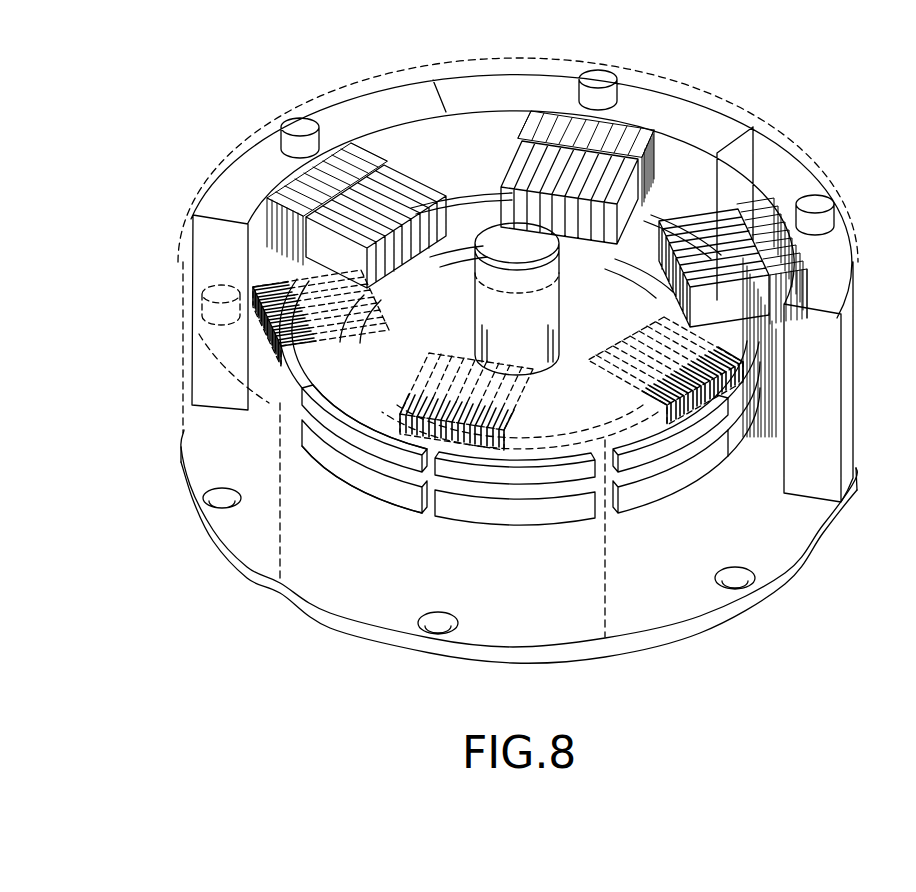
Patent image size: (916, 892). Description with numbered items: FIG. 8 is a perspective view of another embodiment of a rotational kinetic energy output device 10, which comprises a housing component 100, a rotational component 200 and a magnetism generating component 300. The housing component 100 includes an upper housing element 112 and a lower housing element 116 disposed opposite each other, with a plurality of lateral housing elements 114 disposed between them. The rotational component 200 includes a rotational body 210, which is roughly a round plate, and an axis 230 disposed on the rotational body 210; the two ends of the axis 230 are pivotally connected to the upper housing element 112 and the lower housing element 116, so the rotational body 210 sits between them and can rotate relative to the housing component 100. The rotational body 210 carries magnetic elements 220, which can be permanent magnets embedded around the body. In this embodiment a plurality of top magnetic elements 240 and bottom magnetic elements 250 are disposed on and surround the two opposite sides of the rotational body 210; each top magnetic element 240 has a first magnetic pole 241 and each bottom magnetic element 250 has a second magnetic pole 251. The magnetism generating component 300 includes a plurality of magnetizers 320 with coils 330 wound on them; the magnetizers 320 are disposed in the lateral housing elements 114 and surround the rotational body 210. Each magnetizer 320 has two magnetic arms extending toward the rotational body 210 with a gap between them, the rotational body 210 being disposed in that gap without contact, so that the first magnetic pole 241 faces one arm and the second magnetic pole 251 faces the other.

The rotational kinetic energy output device 10 is at (128, 84).
The housing component 100 is at (216, 172).
The upper housing element 112 is at (334, 90).
The lateral housing element 114 is at (826, 184).
The lower housing element 116 is at (230, 563).
The rotational component 200 is at (700, 493).
The rotational body 210 is at (536, 493).
The magnetic element 220 is at (365, 503).
The axis 230 is at (548, 333).
The top magnetic element 240 is at (323, 463).
The first magnetic pole 241 is at (350, 474).
The bottom magnetic element 250 is at (397, 456).
The second magnetic pole 251 is at (397, 400).
The magnetism generating component 300 is at (400, 262).
The magnetizer 320 is at (700, 226).
The coil 330 is at (767, 217).